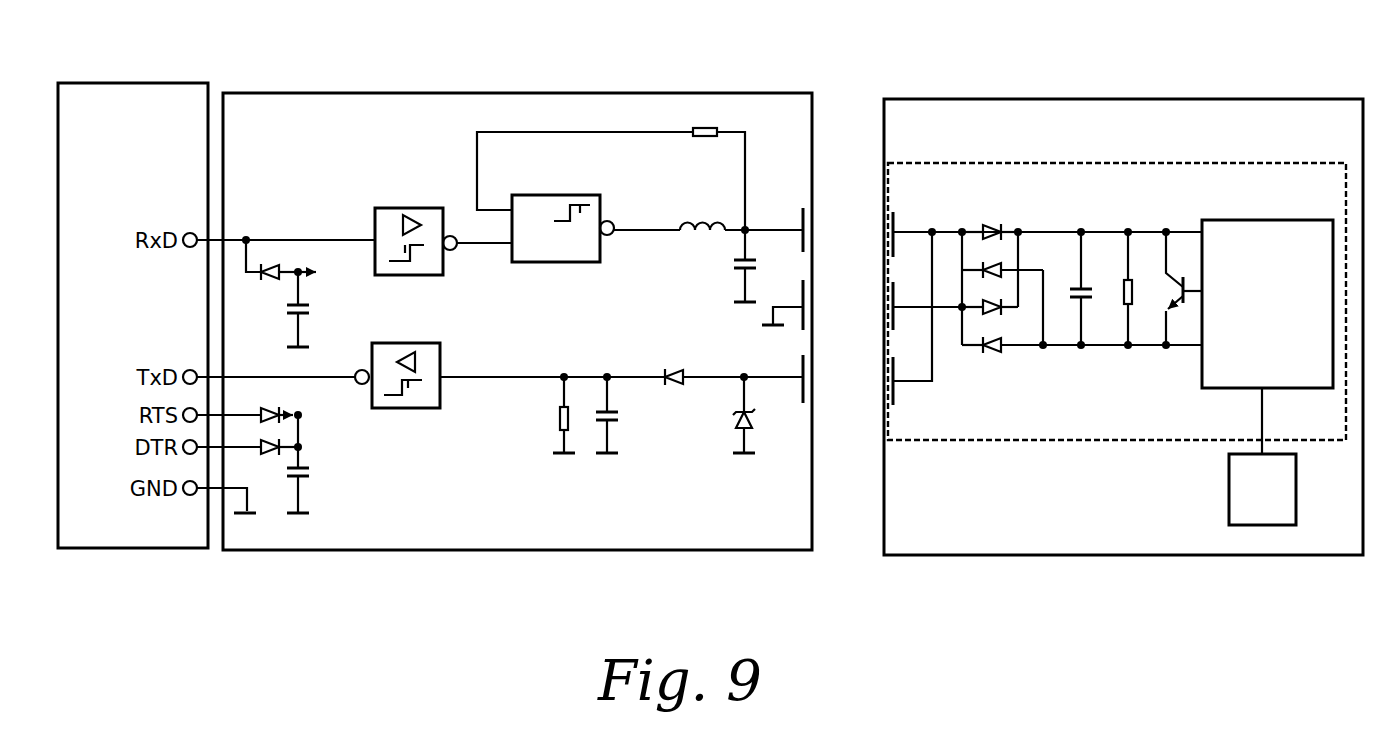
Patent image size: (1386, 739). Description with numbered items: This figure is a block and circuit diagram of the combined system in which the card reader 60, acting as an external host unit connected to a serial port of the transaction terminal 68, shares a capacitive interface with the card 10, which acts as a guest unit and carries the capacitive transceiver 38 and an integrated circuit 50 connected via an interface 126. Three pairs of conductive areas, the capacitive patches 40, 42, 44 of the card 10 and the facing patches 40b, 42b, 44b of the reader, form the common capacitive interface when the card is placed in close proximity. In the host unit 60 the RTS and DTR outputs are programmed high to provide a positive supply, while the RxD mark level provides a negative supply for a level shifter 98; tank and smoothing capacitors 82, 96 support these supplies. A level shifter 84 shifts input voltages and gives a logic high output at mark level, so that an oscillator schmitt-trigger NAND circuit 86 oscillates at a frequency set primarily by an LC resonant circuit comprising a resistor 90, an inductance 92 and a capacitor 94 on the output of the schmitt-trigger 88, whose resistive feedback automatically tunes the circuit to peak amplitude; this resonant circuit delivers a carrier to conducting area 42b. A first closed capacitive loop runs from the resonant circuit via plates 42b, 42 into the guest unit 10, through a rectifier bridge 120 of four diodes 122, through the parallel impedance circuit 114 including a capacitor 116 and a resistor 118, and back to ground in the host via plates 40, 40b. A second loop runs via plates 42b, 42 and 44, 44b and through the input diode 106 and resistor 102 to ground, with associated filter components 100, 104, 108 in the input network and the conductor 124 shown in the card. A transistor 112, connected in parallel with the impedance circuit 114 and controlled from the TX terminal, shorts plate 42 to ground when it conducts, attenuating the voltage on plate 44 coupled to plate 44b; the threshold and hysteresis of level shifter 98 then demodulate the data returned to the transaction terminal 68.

The card/transaction device 10 is at (1098, 99).
The capacitive transceiver 38 is at (1203, 164).
The capacitive patch 40 is at (884, 298).
The capacitive patch 40b is at (813, 318).
The capacitive patch 42 is at (886, 221).
The capacitive patch 42b is at (815, 246).
The capacitive patch 44 is at (884, 375).
The capacitive patch 44b is at (813, 393).
The integrated circuit 50 is at (1229, 485).
The card reader 60 is at (462, 93).
The transaction terminal 68 is at (125, 83).
The tank and smoothing capacitor 82 is at (273, 299).
The level shifter 84 is at (412, 208).
The oscillator schmitt-trigger NAND circuit 86 is at (611, 140).
The schmitt-trigger 88 is at (560, 195).
The resistor 90 is at (703, 138).
The inductance 92 is at (705, 222).
The capacitor 94 is at (738, 258).
The tank and smoothing capacitor 96 is at (330, 452).
The level shifter 98 is at (405, 343).
The filter circuit 100 is at (626, 432).
The resistor 102 is at (558, 416).
The capacitor 104 is at (612, 414).
The input diode 106 is at (672, 356).
The zener diode 108 is at (736, 421).
The transistor 112 is at (1190, 305).
The parallel impedance circuit 114 is at (1101, 333).
The capacitor 116 is at (1086, 298).
The resistor 118 is at (1124, 285).
The rectifier bridge 120 is at (1004, 306).
The diode 122 is at (990, 222).
The conductor 124 is at (934, 353).
The interface 126 is at (1251, 220).